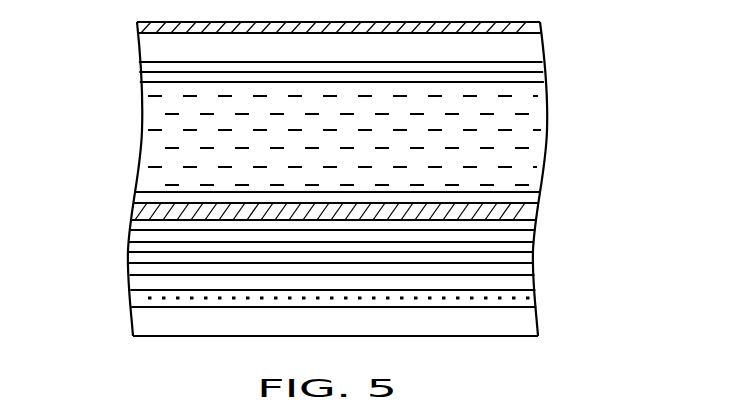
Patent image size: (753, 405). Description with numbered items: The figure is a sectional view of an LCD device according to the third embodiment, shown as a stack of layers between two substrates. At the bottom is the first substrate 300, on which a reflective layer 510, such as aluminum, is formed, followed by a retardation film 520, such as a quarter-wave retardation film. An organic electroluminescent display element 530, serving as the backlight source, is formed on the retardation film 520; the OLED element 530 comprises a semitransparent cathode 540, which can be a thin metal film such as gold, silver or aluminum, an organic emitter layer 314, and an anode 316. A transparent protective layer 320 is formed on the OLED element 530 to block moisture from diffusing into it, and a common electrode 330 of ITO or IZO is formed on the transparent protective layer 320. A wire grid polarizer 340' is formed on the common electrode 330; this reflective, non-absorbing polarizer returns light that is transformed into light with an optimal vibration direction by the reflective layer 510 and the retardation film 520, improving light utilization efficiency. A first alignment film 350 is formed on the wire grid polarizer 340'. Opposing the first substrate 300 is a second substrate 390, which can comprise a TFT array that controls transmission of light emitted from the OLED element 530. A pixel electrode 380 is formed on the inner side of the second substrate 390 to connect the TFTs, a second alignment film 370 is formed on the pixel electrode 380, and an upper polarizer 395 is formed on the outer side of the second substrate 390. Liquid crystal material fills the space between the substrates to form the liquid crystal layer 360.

The first substrate 300 is at (540, 322).
The organic emitter layer 314 is at (533, 263).
The anode 316 is at (533, 250).
The transparent protective layer 320 is at (143, 237).
The common electrode 330 is at (145, 226).
The wire grid polarizer 340' is at (380, 215).
The first alignment film 350 is at (539, 190).
The liquid crystal layer 360 is at (547, 140).
The second alignment film 370 is at (150, 77).
The pixel electrode 380 is at (150, 67).
The second substrate 390 is at (544, 52).
The upper polarizer 395 is at (541, 30).
The reflective layer 510 is at (140, 297).
The retardation film 520 is at (143, 283).
The organic electroluminescent display element 530 is at (404, 263).
The cathode 540 is at (533, 276).